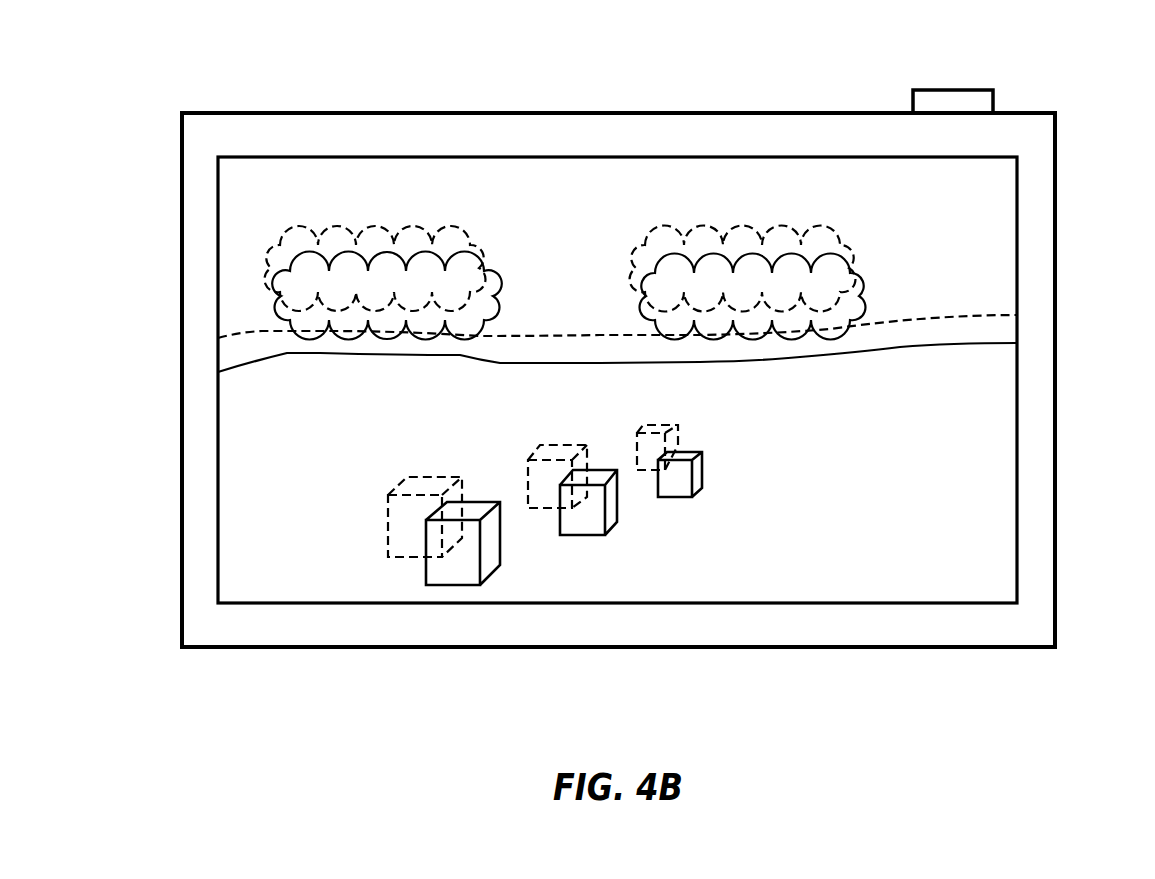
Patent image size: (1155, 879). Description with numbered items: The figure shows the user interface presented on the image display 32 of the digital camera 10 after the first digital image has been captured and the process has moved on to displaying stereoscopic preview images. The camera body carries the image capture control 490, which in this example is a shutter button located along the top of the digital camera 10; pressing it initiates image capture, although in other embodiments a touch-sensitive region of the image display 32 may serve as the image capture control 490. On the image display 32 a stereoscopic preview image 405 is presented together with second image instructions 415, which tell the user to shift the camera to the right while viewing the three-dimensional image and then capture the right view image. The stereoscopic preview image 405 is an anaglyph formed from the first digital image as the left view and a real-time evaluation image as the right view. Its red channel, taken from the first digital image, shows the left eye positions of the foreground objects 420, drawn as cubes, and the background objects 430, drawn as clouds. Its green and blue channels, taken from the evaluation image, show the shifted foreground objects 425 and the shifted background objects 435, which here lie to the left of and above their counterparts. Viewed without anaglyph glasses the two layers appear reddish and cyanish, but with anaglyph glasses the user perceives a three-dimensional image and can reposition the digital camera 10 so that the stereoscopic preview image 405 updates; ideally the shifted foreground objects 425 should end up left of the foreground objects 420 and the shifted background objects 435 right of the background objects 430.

The digital camera 10 is at (1035, 153).
The image display 32 is at (1018, 378).
The stereoscopic preview image 405 is at (995, 265).
The second image instructions 415 is at (613, 175).
The foreground objects 420 is at (453, 585).
The shifted foreground objects 425 is at (415, 558).
The background objects 430 is at (270, 297).
The shifted background objects 435 is at (263, 273).
The image capture control 490 is at (953, 90).